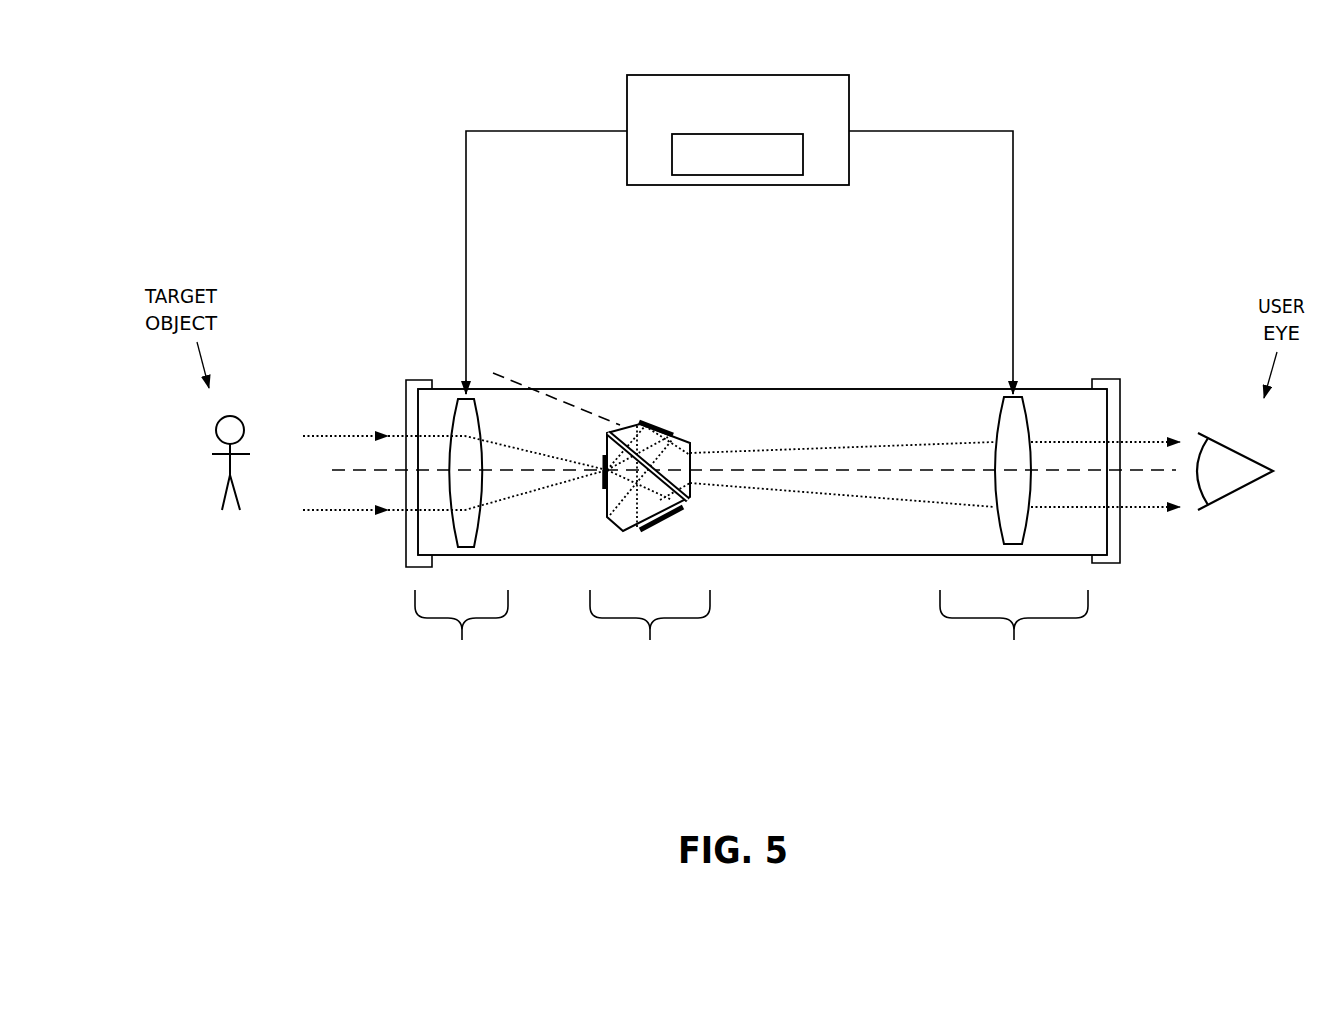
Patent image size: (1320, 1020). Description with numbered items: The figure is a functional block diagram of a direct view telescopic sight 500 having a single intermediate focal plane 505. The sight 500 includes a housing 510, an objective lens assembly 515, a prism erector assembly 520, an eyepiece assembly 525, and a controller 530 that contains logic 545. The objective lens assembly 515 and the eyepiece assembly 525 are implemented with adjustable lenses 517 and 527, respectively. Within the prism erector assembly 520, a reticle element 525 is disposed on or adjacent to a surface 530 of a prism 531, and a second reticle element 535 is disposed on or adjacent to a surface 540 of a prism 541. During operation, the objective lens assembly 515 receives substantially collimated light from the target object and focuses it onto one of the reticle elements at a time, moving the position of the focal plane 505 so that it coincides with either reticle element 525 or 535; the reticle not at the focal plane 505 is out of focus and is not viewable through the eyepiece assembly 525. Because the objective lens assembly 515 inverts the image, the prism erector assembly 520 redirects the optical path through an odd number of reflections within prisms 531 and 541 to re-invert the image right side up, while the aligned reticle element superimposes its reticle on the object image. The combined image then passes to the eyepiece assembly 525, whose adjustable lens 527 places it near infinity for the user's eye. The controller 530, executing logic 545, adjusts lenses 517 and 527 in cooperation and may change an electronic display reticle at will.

The direct view telescopic sight 500 is at (420, 235).
The intermediate focal plane 505 is at (513, 381).
The housing 510 is at (1047, 388).
The objective lens assembly 515 is at (462, 649).
The adjustable lens 517 is at (453, 413).
The prism erector assembly 520 is at (664, 647).
The reticle element / eyepiece assembly 525 is at (647, 426).
The adjustable lens 527 is at (1005, 413).
The controller / surface 530 is at (684, 443).
The prism 531 is at (715, 438).
The reticle element 535 is at (604, 486).
The surface 540 is at (604, 449).
The prism 541 is at (600, 532).
The logic 545 is at (786, 165).